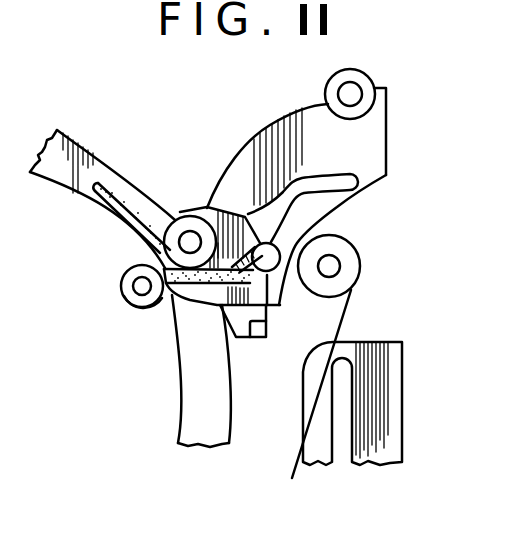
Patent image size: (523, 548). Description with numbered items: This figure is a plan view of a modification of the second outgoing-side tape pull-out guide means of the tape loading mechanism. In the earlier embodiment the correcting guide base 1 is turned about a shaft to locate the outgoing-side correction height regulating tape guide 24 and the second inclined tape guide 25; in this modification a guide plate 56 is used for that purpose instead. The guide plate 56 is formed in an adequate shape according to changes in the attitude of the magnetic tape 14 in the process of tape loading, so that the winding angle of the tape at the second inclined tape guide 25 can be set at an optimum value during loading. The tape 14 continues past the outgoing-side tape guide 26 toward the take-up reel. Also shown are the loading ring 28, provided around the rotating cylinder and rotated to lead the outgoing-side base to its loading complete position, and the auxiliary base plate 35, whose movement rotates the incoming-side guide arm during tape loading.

The correcting guide base 1 is at (206, 213).
The magnetic tape 14 is at (347, 317).
The outgoing-side correction height regulating tape guide 24 is at (176, 220).
The second inclined tape guide 25 is at (300, 228).
The outgoing-side tape guide 26 is at (352, 258).
The loading ring 28 is at (193, 418).
The auxiliary base plate 35 is at (393, 393).
The guide plate 56 is at (380, 137).